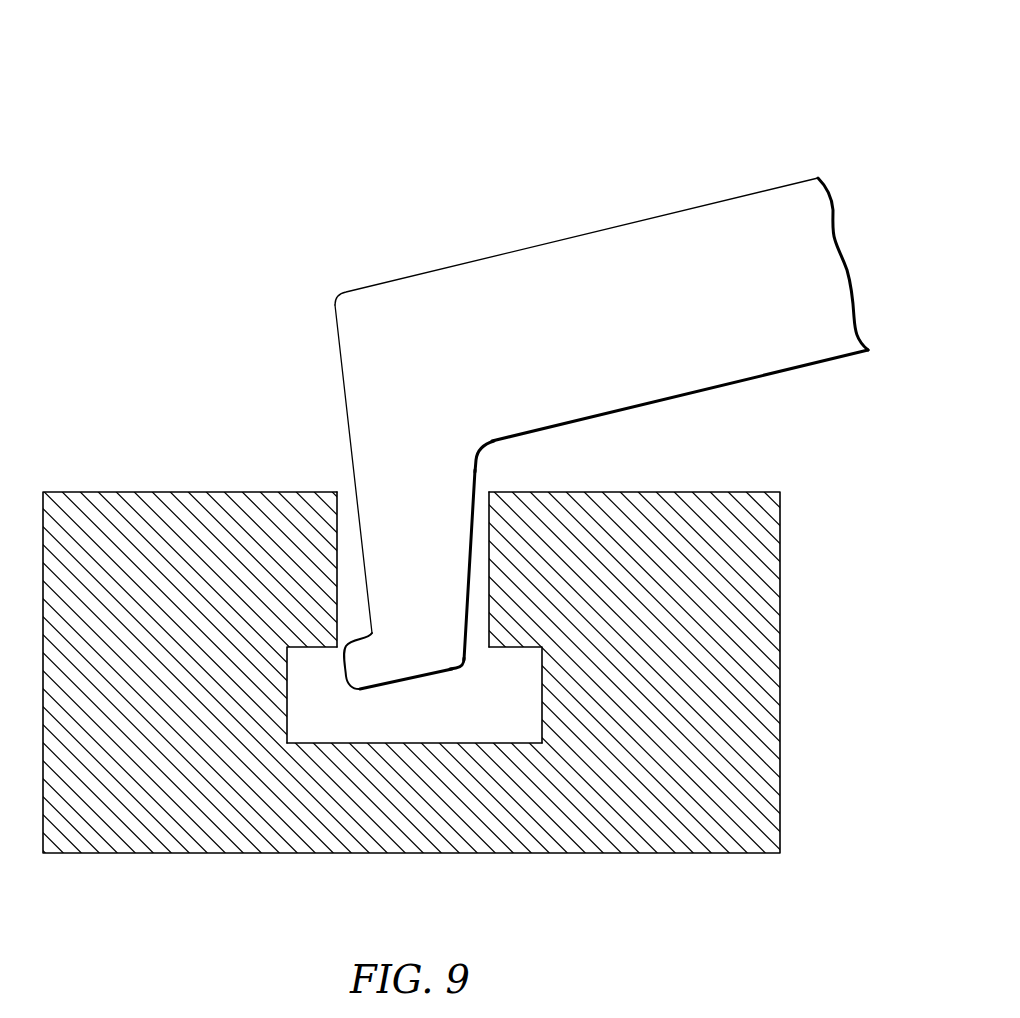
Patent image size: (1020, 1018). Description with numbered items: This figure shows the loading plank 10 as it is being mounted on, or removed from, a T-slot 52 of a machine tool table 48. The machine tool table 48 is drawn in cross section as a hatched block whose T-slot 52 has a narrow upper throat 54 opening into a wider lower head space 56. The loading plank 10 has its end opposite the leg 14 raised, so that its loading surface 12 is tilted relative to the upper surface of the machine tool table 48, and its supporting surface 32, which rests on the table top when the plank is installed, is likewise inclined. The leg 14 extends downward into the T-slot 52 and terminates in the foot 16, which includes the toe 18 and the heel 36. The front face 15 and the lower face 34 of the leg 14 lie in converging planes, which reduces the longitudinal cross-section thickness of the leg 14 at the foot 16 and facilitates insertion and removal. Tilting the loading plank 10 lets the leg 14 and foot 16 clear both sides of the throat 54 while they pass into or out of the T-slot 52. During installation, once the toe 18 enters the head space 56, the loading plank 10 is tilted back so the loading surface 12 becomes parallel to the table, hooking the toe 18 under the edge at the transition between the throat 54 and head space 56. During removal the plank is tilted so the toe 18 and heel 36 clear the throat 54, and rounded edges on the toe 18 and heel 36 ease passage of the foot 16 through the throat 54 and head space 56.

The loading plank 10 is at (675, 96).
The loading surface 12 is at (607, 229).
The leg 14 is at (407, 615).
The front face 15 is at (351, 452).
The foot 16 is at (420, 678).
The toe 18 is at (346, 675).
The supporting surface 32 is at (790, 371).
The lower face 34 is at (478, 470).
The heel 36 is at (470, 672).
The machine tool table 48 is at (129, 492).
The T-slot 52 is at (464, 733).
The throat 54 is at (489, 572).
The head space 56 is at (522, 744).